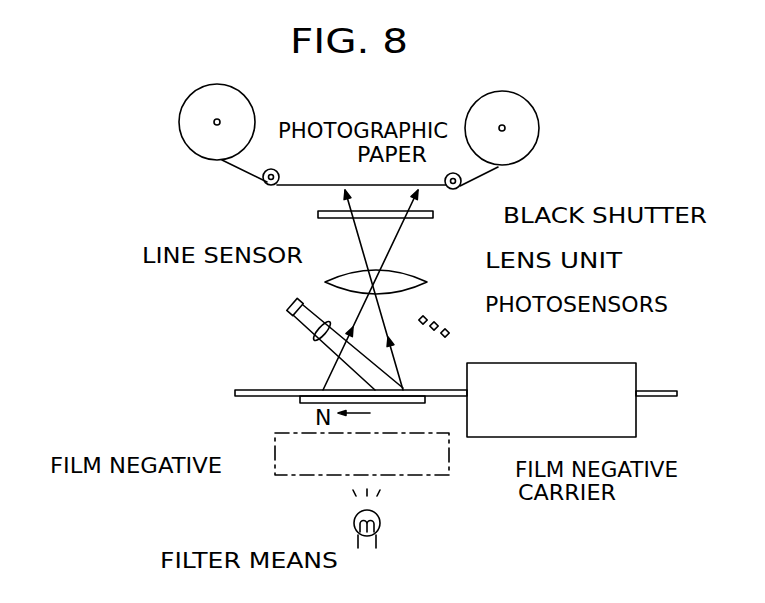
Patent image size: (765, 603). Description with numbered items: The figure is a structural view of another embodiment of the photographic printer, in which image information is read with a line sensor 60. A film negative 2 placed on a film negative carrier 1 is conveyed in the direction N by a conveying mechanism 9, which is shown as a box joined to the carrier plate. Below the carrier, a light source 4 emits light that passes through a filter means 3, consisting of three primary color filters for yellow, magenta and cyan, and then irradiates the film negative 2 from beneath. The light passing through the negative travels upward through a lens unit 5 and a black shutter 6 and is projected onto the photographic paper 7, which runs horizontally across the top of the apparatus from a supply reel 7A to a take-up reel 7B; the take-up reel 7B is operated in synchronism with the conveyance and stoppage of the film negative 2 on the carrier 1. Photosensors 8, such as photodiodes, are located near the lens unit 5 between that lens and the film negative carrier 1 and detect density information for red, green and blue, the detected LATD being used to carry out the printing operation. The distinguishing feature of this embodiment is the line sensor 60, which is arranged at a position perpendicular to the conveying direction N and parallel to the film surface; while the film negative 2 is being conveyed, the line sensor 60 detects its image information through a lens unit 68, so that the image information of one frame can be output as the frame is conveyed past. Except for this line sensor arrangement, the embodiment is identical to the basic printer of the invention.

The film negative carrier 1 is at (425, 404).
The film negative 2 is at (245, 397).
The filter means 3 is at (282, 478).
The light source 4 is at (380, 522).
The lens unit 5 is at (412, 272).
The black shutter 6 is at (440, 214).
The photographic paper 7 is at (309, 185).
The supply reel 7A is at (183, 107).
The take-up reel 7B is at (535, 115).
The photosensors 8 is at (423, 303).
The conveying mechanism 9 is at (585, 363).
The line sensor 60 is at (287, 305).
The lens unit 68 is at (312, 337).